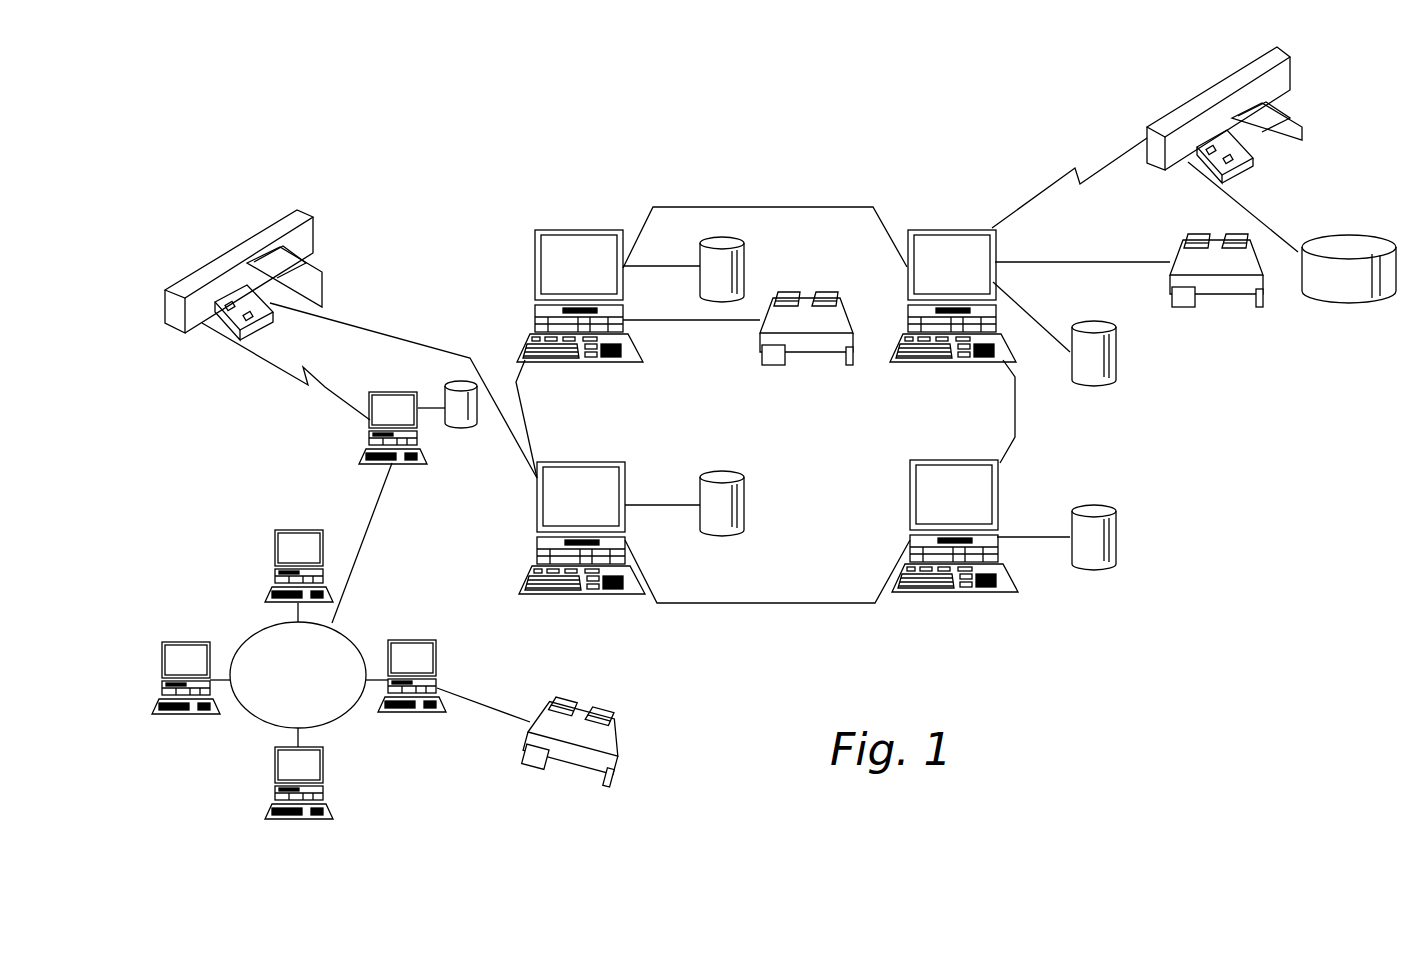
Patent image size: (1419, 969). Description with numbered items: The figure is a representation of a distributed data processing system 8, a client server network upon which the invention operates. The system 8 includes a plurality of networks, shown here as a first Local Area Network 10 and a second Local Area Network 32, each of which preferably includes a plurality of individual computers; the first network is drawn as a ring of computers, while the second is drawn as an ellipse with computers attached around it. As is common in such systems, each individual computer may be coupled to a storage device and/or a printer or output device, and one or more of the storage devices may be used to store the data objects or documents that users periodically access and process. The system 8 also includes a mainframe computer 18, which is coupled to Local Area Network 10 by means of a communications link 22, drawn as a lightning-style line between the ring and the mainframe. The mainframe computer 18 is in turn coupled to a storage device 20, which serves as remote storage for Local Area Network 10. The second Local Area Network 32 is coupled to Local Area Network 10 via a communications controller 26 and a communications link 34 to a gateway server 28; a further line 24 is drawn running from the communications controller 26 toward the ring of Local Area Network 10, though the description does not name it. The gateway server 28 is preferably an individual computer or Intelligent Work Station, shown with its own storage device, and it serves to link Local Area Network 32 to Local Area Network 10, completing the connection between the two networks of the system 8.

The distributed data processing system 8 is at (793, 162).
The Local Area Network 10 is at (792, 603).
The mainframe computer 18 is at (1218, 80).
The storage device 20 is at (1368, 240).
The communications link 22 is at (1103, 158).
The communications link 24 is at (398, 332).
The communications controller 26 is at (310, 213).
The gateway server 28 is at (392, 392).
The Local Area Network 32 is at (257, 718).
The communications link 34 is at (322, 388).